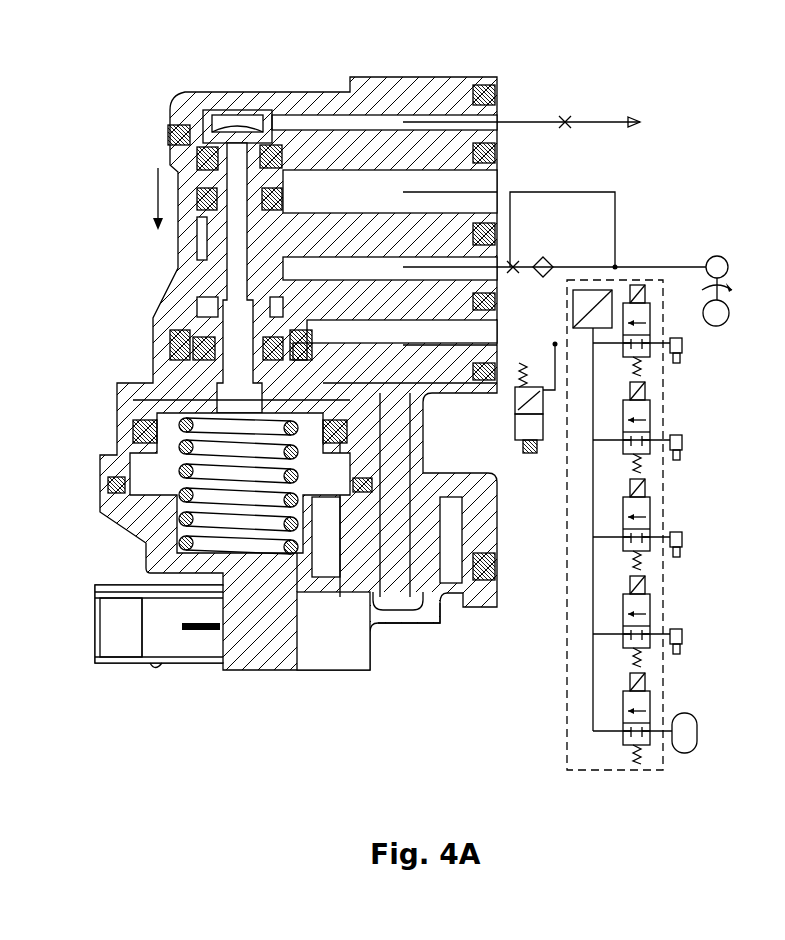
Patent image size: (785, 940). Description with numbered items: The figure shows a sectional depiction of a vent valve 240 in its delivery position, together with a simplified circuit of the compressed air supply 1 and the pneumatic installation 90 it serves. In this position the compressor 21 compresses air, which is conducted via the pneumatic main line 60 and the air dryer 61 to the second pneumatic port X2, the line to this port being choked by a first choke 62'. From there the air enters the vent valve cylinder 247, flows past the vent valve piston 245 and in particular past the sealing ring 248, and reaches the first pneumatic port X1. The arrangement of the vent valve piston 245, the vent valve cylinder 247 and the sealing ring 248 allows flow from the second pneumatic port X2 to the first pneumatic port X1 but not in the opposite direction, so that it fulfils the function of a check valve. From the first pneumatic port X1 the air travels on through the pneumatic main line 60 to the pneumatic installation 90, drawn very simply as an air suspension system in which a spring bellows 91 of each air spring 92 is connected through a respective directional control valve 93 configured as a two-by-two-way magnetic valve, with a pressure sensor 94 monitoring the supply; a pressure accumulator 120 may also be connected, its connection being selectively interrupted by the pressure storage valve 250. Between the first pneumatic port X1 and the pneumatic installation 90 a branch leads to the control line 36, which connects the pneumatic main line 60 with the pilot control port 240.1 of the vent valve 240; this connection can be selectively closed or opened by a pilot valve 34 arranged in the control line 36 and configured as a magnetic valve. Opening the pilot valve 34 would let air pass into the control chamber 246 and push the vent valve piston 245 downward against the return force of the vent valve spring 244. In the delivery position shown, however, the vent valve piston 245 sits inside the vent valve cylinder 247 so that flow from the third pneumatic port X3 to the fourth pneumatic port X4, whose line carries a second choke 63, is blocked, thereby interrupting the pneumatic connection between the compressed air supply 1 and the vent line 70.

The vent valve 240 is at (158, 71).
The vent valve cylinder 247 is at (232, 122).
The vent valve piston 245 is at (190, 228).
The sealing ring 248 is at (187, 270).
The control chamber 246 is at (150, 480).
The vent valve spring 244 is at (270, 530).
The fourth pneumatic port X4 is at (503, 117).
The third pneumatic port X3 is at (503, 187).
The second pneumatic port X2 is at (503, 262).
The first pneumatic port X1 is at (503, 340).
The second choke 63 is at (566, 115).
The vent line 70 is at (608, 120).
The compressor 21 is at (715, 248).
The pneumatic main line 60 is at (597, 192).
The first choke 62' is at (528, 235).
The air dryer 61 is at (545, 257).
The pressure sensor 94 is at (592, 290).
The compressed air supply 1 is at (618, 250).
The pilot control port 240.1 is at (500, 395).
The pilot valve 34 is at (522, 445).
The control line 36 is at (551, 400).
The pneumatic installation 90 is at (642, 790).
The directional control valve 93 is at (634, 358).
The spring bellows 91 is at (677, 336).
The air spring 92 is at (692, 350).
The pressure accumulator 120 is at (685, 755).
The pressure storage valve 250 is at (630, 745).